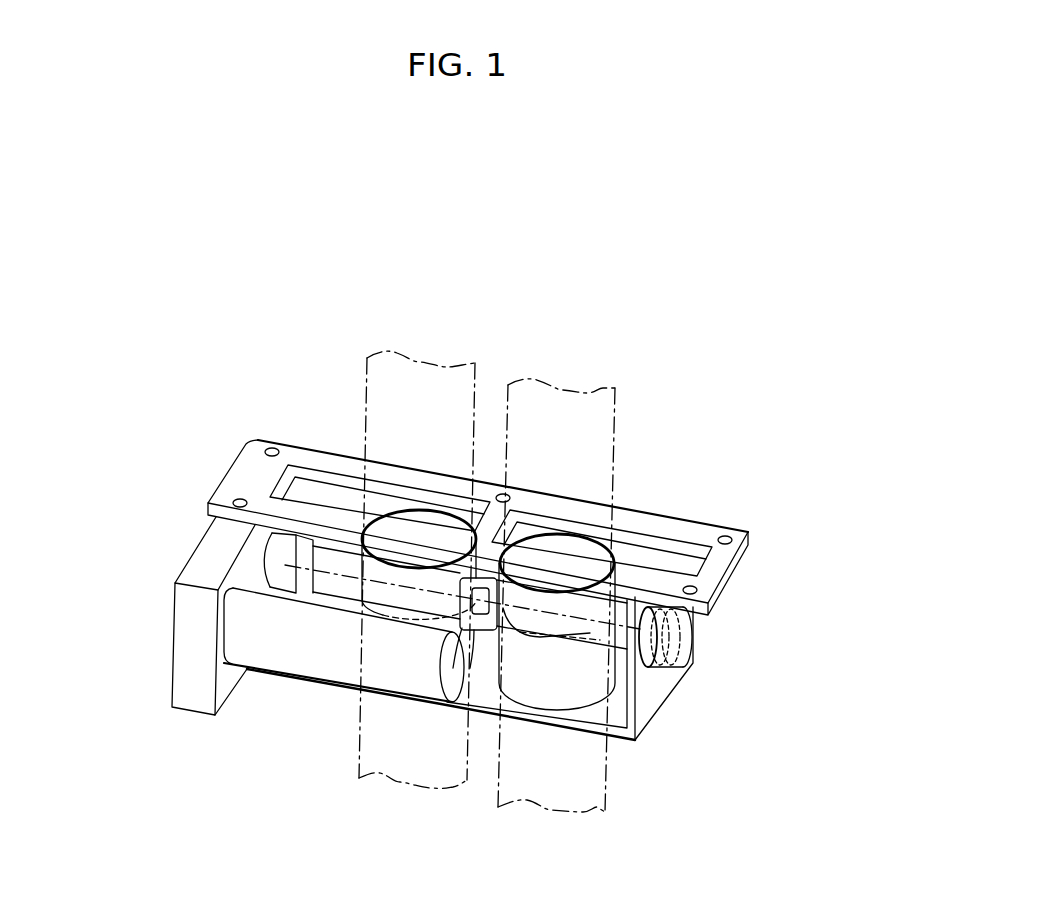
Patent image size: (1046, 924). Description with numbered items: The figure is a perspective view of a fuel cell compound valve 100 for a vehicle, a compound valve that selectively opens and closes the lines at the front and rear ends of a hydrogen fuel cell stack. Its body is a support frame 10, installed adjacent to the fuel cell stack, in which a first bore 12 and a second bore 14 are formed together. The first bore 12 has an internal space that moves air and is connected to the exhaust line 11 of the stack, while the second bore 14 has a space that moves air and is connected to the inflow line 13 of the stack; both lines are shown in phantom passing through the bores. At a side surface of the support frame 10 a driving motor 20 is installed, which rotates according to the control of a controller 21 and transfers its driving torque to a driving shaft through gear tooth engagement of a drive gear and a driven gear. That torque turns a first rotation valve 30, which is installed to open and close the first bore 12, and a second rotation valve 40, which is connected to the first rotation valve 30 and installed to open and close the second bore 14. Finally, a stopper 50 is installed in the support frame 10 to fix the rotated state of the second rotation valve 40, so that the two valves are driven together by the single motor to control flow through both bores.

The fuel cell compound valve 100 is at (673, 350).
The support frame 10 is at (645, 720).
The exhaust line 11 is at (420, 370).
The first bore 12 is at (385, 512).
The inflow line 13 is at (548, 393).
The second bore 14 is at (613, 535).
The driving motor 20 is at (235, 637).
The controller 21 is at (182, 600).
The first rotation valve 30 is at (382, 600).
The second rotation valve 40 is at (607, 679).
The stopper 50 is at (689, 641).